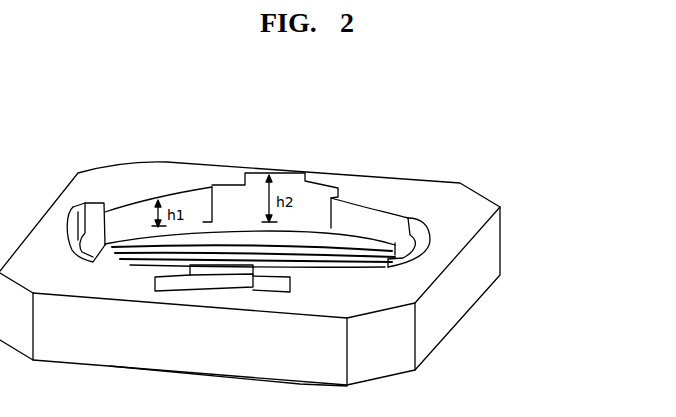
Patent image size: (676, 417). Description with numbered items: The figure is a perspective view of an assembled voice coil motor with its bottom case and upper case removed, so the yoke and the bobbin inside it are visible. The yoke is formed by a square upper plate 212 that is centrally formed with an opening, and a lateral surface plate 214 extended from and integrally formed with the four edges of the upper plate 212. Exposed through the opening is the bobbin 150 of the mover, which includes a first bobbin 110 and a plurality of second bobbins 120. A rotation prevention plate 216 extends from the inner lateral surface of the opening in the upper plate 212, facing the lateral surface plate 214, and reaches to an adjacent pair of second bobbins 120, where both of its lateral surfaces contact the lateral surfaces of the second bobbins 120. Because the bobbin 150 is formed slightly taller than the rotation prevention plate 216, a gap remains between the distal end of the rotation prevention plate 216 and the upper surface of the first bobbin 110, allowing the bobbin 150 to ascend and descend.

The first bobbin 110 is at (307, 278).
The second bobbins 120 is at (287, 177).
The bobbin 150 is at (268, 189).
The upper plate 212 is at (150, 174).
The lateral surface plate 214 is at (472, 268).
The rotation prevention plate 216 is at (147, 212).